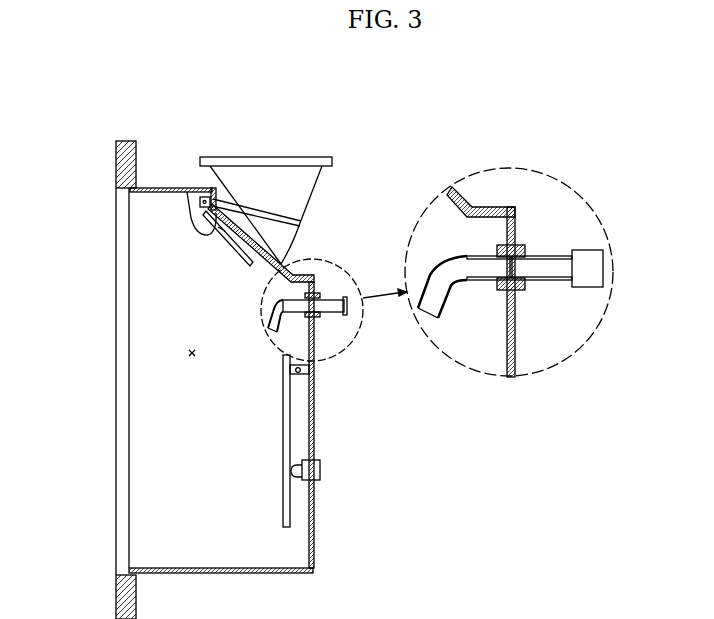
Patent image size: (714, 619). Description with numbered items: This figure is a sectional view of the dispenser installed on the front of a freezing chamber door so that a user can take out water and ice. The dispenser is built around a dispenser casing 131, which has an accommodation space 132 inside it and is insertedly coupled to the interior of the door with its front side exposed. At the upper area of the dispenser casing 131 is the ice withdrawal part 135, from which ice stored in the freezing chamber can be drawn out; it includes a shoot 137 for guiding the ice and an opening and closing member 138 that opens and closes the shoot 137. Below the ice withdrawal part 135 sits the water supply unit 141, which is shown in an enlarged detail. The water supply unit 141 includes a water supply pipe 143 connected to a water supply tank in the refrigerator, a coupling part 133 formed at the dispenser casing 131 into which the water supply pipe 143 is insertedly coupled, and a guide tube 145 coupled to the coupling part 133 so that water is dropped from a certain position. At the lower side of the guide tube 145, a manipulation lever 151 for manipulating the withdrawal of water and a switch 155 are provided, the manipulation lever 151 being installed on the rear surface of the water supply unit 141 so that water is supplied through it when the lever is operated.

The dispenser casing 131 is at (107, 168).
The accommodation space 132 is at (190, 353).
The coupling part 133 is at (515, 290).
The ice withdrawal part 135 is at (250, 173).
The shoot 137 is at (228, 156).
The opening and closing member 138 is at (187, 192).
The water supply unit 141 is at (509, 315).
The water supply pipe 143 is at (555, 280).
The guide tube 145 is at (448, 302).
The manipulation lever 151 is at (282, 512).
The switch 155 is at (295, 477).